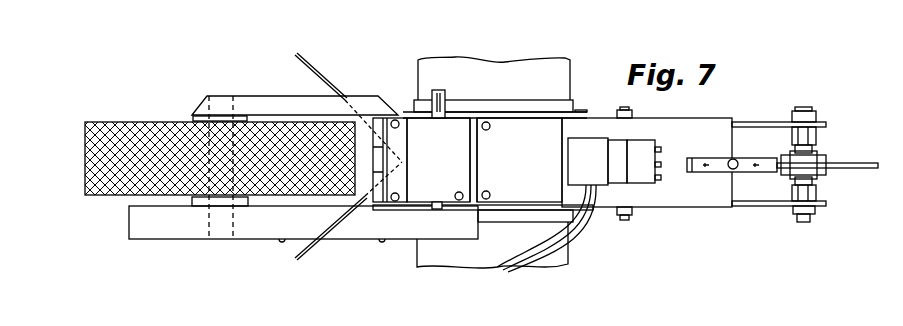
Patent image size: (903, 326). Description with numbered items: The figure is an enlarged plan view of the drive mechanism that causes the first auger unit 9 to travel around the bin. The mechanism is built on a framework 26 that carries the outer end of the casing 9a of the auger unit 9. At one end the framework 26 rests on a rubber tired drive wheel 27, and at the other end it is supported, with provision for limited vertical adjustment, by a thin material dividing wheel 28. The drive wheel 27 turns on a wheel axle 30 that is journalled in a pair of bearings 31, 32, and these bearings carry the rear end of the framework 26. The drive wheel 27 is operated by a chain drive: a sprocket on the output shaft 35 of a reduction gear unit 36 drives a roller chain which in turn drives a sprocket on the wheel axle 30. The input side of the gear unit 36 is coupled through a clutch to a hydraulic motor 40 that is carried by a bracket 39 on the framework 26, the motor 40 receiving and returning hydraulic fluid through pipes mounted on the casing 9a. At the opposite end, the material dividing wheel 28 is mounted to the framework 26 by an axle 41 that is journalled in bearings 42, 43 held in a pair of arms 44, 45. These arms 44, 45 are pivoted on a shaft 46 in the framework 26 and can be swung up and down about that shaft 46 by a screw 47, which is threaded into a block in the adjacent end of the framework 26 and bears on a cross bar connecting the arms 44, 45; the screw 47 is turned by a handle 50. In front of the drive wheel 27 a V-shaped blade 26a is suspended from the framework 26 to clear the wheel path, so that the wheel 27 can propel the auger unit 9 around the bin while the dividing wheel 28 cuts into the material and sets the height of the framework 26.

The drive wheel 27 is at (85, 141).
The wheel axle 30 is at (218, 96).
The bearing 32 is at (194, 116).
The bearing 31 is at (193, 210).
The framework 26 is at (351, 88).
The V-shaped blade 26a is at (302, 260).
The auger unit 9 is at (571, 88).
The casing 9a is at (568, 258).
The reduction gear unit 36 is at (446, 167).
The bracket 39 is at (531, 170).
The output shaft 35 is at (438, 210).
The hydraulic motor 40 is at (601, 167).
The shaft 46 is at (625, 220).
The arm 44 is at (757, 122).
The arm 45 is at (757, 206).
The handle 50 is at (707, 172).
The screw 47 is at (746, 160).
The material dividing wheel 28 is at (851, 168).
The bearing 42 is at (817, 135).
The bearing 43 is at (817, 195).
The axle 41 is at (806, 222).